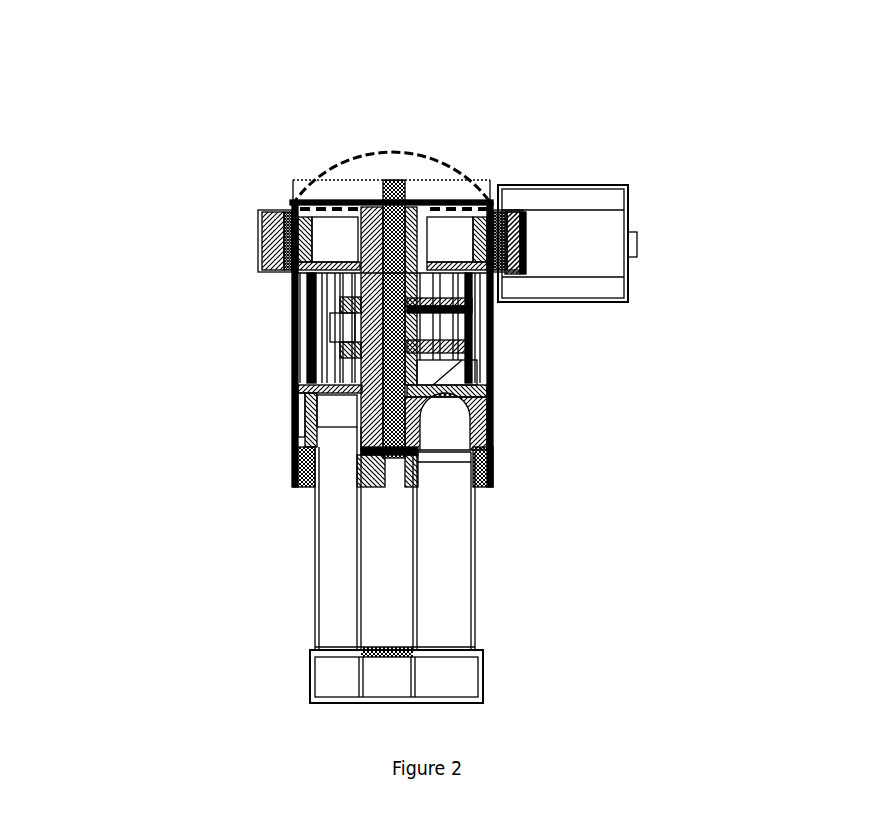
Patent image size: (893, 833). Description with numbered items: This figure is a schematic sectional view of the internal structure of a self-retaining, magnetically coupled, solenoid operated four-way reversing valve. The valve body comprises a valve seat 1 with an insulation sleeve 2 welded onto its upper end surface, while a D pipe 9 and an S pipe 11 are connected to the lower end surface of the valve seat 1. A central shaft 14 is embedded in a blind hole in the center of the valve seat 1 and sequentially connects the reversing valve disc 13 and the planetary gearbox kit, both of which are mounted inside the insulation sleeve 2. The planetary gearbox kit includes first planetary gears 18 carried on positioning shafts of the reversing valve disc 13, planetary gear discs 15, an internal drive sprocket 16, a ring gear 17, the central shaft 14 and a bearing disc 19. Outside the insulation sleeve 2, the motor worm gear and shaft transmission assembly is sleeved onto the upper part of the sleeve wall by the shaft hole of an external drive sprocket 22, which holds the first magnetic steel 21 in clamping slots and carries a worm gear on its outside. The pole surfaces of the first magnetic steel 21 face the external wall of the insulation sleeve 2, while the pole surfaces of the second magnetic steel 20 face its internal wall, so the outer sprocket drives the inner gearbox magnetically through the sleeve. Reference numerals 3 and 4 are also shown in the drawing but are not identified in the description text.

The valve seat 1 is at (293, 475).
The insulation sleeve 2 is at (293, 422).
The outer housing 3 is at (257, 213).
The side connector box 4 is at (607, 253).
The D pipe 9 is at (333, 592).
The S pipe 11 is at (450, 592).
The reversing valve disc 13 is at (493, 407).
The central shaft 14 is at (383, 200).
The planetary gear discs 15 is at (493, 308).
The internal drive sprocket 16 is at (350, 202).
The ring gear 17 is at (300, 290).
The first planetary gears 18 is at (297, 338).
The bearing disc 19 is at (413, 203).
The second magnetic steel 20 is at (488, 200).
The first magnetic steel 21 is at (515, 212).
The external drive sprocket 22 is at (528, 225).